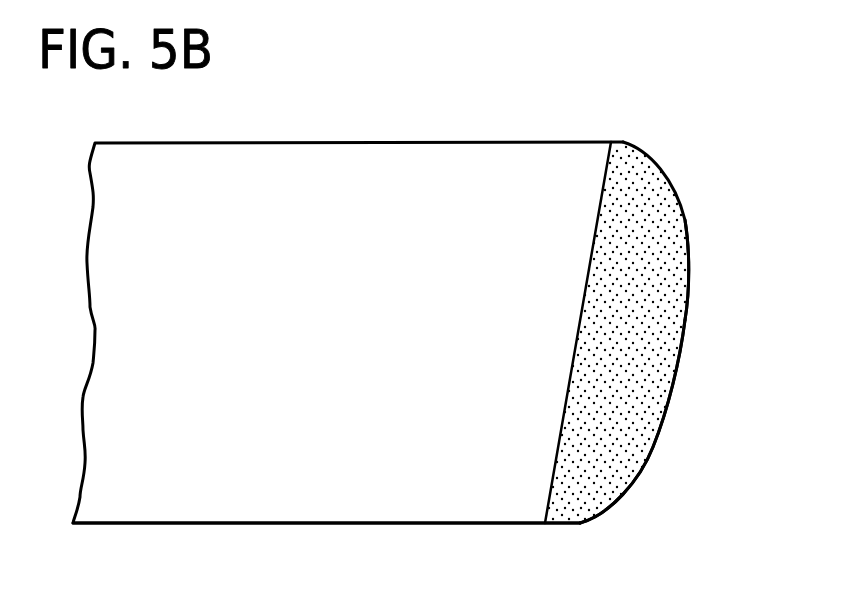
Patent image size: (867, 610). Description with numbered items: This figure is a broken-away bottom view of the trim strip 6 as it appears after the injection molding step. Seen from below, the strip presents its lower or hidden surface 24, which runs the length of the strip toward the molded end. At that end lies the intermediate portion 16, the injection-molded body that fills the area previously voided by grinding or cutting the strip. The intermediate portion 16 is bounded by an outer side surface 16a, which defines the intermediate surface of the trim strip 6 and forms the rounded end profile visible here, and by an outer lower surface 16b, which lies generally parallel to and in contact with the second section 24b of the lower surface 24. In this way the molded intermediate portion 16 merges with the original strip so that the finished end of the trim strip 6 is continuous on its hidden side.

The trim strip 6 is at (458, 132).
The intermediate portion 16 is at (663, 200).
The outer side surface 16a is at (688, 300).
The outer lower surface 16b is at (630, 448).
The lower surface 24 is at (577, 158).
The second section of the lower surface 24b is at (464, 503).